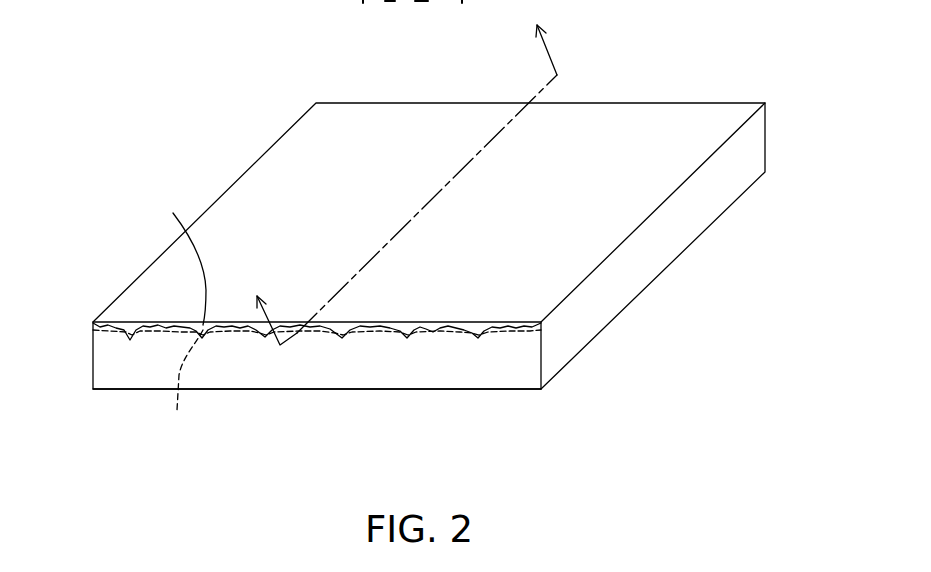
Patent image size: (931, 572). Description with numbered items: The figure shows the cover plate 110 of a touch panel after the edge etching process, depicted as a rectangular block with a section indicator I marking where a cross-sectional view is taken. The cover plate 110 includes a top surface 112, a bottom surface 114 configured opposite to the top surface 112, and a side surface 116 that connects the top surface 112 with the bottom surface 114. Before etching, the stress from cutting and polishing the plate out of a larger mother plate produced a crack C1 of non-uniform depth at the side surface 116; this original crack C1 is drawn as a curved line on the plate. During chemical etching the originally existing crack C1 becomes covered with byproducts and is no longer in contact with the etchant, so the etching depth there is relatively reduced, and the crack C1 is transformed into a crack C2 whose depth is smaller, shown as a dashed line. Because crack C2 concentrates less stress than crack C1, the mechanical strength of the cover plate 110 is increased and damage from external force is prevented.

The cover plate 110 is at (579, 444).
The top surface 112 is at (567, 250).
The bottom surface 114 is at (382, 403).
The side surface 116 is at (314, 361).
The crack C1 is at (180, 251).
The crack C2 is at (185, 388).
The section line I- I is at (405, 172).